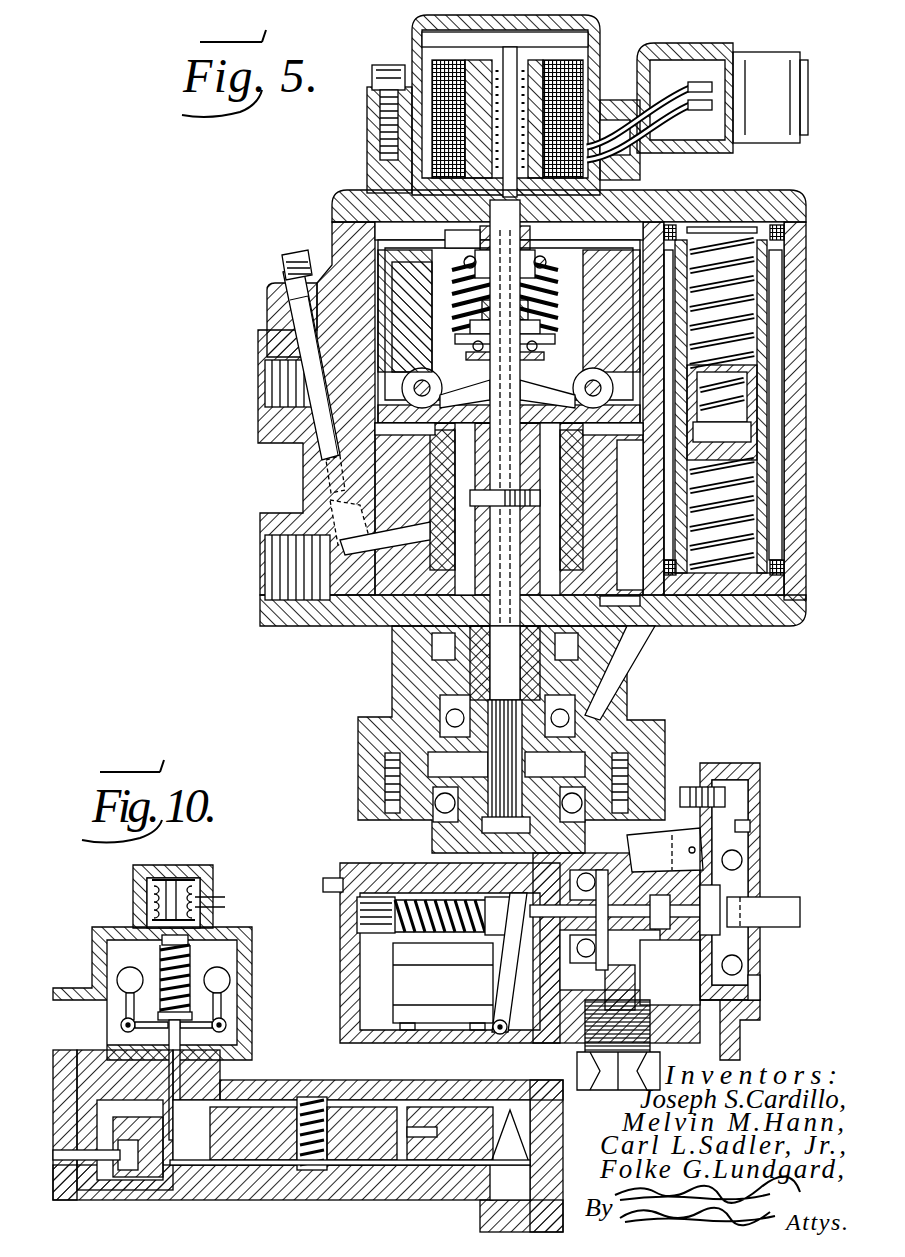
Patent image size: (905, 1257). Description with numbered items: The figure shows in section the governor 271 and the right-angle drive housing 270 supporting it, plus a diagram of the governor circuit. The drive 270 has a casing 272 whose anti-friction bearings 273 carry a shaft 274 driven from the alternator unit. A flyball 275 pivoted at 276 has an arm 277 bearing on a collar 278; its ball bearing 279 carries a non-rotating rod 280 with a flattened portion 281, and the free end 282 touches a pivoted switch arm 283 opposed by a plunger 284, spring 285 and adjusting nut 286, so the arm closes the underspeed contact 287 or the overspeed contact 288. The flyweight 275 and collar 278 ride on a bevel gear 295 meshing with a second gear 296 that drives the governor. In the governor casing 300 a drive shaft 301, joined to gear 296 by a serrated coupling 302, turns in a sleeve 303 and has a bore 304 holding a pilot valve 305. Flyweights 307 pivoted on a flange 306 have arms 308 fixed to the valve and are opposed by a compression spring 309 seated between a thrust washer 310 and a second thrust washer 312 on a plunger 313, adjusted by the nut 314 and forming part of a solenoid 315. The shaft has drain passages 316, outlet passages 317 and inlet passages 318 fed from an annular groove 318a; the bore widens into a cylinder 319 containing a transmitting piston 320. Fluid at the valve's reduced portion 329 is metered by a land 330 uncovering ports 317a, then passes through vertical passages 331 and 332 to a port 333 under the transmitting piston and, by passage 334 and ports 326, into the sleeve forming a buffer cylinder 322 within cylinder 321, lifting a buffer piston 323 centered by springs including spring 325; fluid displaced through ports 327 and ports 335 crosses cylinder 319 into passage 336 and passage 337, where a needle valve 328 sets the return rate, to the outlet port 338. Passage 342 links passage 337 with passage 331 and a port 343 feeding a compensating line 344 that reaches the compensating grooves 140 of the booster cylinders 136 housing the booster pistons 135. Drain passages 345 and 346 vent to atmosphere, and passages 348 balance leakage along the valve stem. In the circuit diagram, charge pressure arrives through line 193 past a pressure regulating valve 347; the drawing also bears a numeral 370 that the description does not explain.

In FIG. 5, the solenoid 315 is at (614, 43).
In FIG. 10, the solenoid 315 is at (127, 893).
In FIG. 5, the plunger 313 is at (390, 192).
In FIG. 5, the compression spring 309 is at (455, 290).
In FIG. 10, the compression spring 309 is at (162, 958).
In FIG. 5, the flyweights 307 is at (395, 275).
In FIG. 10, the flyweights 307 is at (125, 980).
In FIG. 5, the governor 271 is at (207, 262).
In FIG. 10, the governor 271 is at (255, 975).
In FIG. 5, the nut 314 is at (518, 236).
In FIG. 5, the second thrust washer 312 is at (535, 258).
In FIG. 5, the thrust washer 310 is at (568, 300).
In FIG. 5, the second pair of ports 327 is at (765, 270).
In FIG. 5, the transmitting piston 320 is at (725, 322).
In FIG. 5, the buffer piston 323 is at (770, 375).
In FIG. 10, the buffer piston 323 is at (322, 1105).
In FIG. 5, the pair of ports 326 is at (772, 430).
In FIG. 5, the buffer cylinder sleeve 322 is at (770, 470).
In FIG. 5, the cylinder 321 is at (780, 485).
In FIG. 5, the spring 325 is at (740, 545).
In FIG. 5, the outlet port 338 is at (270, 404).
In FIG. 5, the passage 337 is at (325, 431).
In FIG. 5, the arm 308 is at (507, 388).
In FIG. 10, the arm 308 is at (200, 1023).
In FIG. 5, the ports 335 is at (546, 374).
In FIG. 5, the flange 306 is at (522, 370).
In FIG. 5, the passage 336 is at (405, 430).
In FIG. 5, the drain passage 346 is at (613, 430).
In FIG. 5, the needle valve 328 is at (325, 460).
In FIG. 10, the needle valve 328 is at (415, 1130).
In FIG. 5, the passages 348 is at (600, 440).
In FIG. 5, the sleeve 303 is at (325, 505).
In FIG. 5, the passage 342 is at (340, 540).
In FIG. 5, the cylinder 319 is at (505, 498).
In FIG. 5, the passage 370 is at (560, 500).
In FIG. 5, the pilot valve 305 is at (520, 520).
In FIG. 10, the pilot valve 305 is at (182, 1050).
In FIG. 5, the passage 334 is at (580, 530).
In FIG. 5, the port 333 is at (385, 538).
In FIG. 10, the port 333 is at (258, 1107).
In FIG. 5, the inlet passages 318 is at (560, 560).
In FIG. 5, the port 343 is at (270, 579).
In FIG. 5, the reduced portion 329 is at (560, 585).
In FIG. 5, the vertical passage 332 is at (632, 573).
In FIG. 5, the annular groove 318a is at (470, 618).
In FIG. 5, the vertical passage 331 is at (480, 640).
In FIG. 5, the ports 317a is at (485, 660).
In FIG. 5, the bore 304 is at (455, 680).
In FIG. 5, the drive shaft 301 is at (455, 695).
In FIG. 5, the serrated coupling 302 is at (430, 760).
In FIG. 5, the outlet passages 317 is at (640, 628).
In FIG. 10, the outlet passages 317 is at (225, 1165).
In FIG. 5, the drain passage 345 is at (620, 640).
In FIG. 5, the control land 330 is at (560, 630).
In FIG. 5, the drain passages 316 is at (578, 672).
In FIG. 5, the casing 300 is at (790, 626).
In FIG. 5, the right angle bevel gear 295 is at (650, 830).
In FIG. 5, the flyball 275 is at (690, 790).
In FIG. 5, the casing 272 is at (735, 765).
In FIG. 5, the pivot 276 is at (748, 826).
In FIG. 5, the anti-friction bearings 273 is at (745, 860).
In FIG. 5, the arm 277 is at (745, 890).
In FIG. 5, the shaft 274 is at (775, 905).
In FIG. 5, the right-angle drive housing 270 is at (325, 840).
In FIG. 5, the second right angle gear 296 is at (420, 845).
In FIG. 5, the rod 280 is at (625, 912).
In FIG. 5, the ball bearing 279 is at (755, 950).
In FIG. 5, the collar 278 is at (745, 970).
In FIG. 5, the adjusting nut 286 is at (400, 935).
In FIG. 5, the spring 285 is at (435, 935).
In FIG. 5, the plunger 284 is at (495, 938).
In FIG. 5, the flattened portion 281 is at (628, 955).
In FIG. 5, the contact 287 is at (490, 995).
In FIG. 5, the contact 288 is at (490, 980).
In FIG. 5, the free end 282 is at (540, 975).
In FIG. 5, the switch arm 283 is at (512, 1030).
In FIG. 10, the cylinder 136 is at (575, 1120).
In FIG. 10, the booster piston 135 is at (500, 1205).
In FIG. 10, the pressure regulating valve 347 is at (100, 1180).
In FIG. 10, the line 193 is at (55, 1160).
In FIG. 10, the annular compensating groove 140 is at (455, 1110).
In FIG. 10, the compensating line 344 is at (420, 1165).